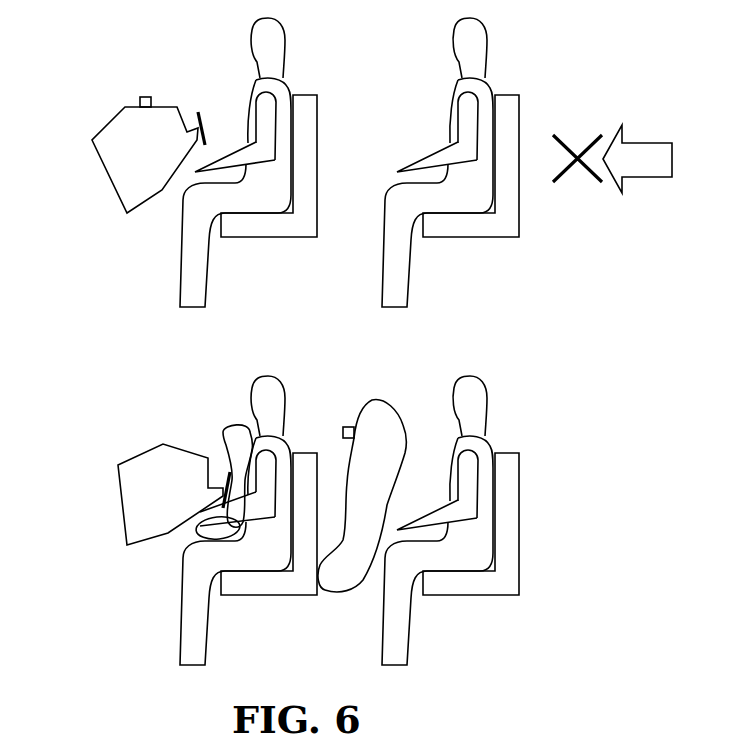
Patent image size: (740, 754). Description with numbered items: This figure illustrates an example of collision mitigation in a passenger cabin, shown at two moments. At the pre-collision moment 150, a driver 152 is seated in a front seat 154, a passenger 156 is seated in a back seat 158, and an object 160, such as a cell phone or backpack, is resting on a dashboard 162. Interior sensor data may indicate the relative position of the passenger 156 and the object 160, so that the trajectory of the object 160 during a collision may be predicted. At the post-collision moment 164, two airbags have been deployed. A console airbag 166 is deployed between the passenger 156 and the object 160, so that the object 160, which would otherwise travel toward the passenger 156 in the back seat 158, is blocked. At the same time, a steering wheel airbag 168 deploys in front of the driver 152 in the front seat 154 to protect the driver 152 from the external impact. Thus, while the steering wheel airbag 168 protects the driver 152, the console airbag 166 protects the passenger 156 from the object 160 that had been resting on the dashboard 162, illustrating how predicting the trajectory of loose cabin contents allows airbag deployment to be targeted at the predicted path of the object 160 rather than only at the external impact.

The pre-collision moment 150 is at (58, 117).
The driver 152 is at (287, 63).
The front seat 154 is at (320, 167).
The passenger 156 is at (485, 73).
The back seat 158 is at (519, 137).
The object 160 is at (144, 97).
The dashboard 162 is at (158, 107).
The post-collision moment 164 is at (58, 462).
The console airbag 166 is at (407, 437).
The steering wheel airbag 168 is at (232, 424).